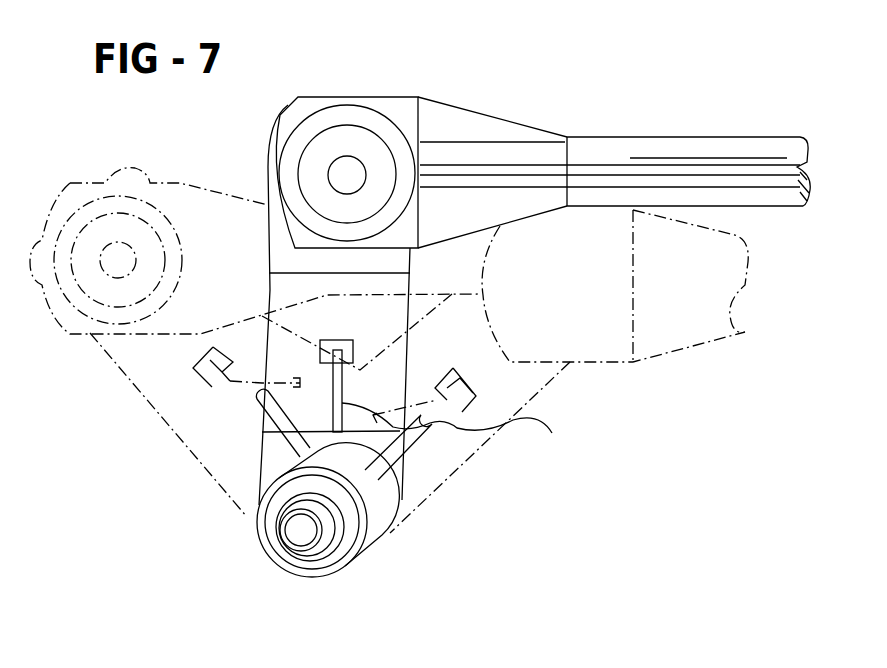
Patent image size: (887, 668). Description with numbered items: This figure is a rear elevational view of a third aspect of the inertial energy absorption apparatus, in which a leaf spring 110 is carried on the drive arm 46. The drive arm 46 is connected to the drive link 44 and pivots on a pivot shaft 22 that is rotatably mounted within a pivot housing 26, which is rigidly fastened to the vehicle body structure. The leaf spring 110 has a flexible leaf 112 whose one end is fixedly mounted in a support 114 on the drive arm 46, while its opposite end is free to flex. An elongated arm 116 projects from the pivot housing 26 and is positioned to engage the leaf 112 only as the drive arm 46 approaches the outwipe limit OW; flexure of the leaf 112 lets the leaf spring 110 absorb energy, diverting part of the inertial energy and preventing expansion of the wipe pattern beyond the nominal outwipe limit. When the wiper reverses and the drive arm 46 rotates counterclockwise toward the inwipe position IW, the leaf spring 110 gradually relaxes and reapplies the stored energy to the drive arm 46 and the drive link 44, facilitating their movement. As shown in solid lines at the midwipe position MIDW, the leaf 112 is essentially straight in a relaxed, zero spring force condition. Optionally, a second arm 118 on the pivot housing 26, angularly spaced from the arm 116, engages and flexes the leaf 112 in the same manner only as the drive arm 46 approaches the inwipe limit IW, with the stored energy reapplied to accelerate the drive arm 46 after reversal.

The midwipe position MIDW is at (335, 97).
The drive link 44 is at (622, 150).
The inwipe position IW is at (113, 360).
The outwipe position OW is at (480, 450).
The support 114 is at (320, 358).
The leaf spring 110 is at (345, 385).
The flexible leaf 112 is at (381, 406).
The second arm 118 is at (272, 411).
The elongated arm 116 is at (405, 452).
The drive arm 46 is at (262, 467).
The pivot housing 26 is at (260, 505).
The pivot shaft 22 is at (293, 540).